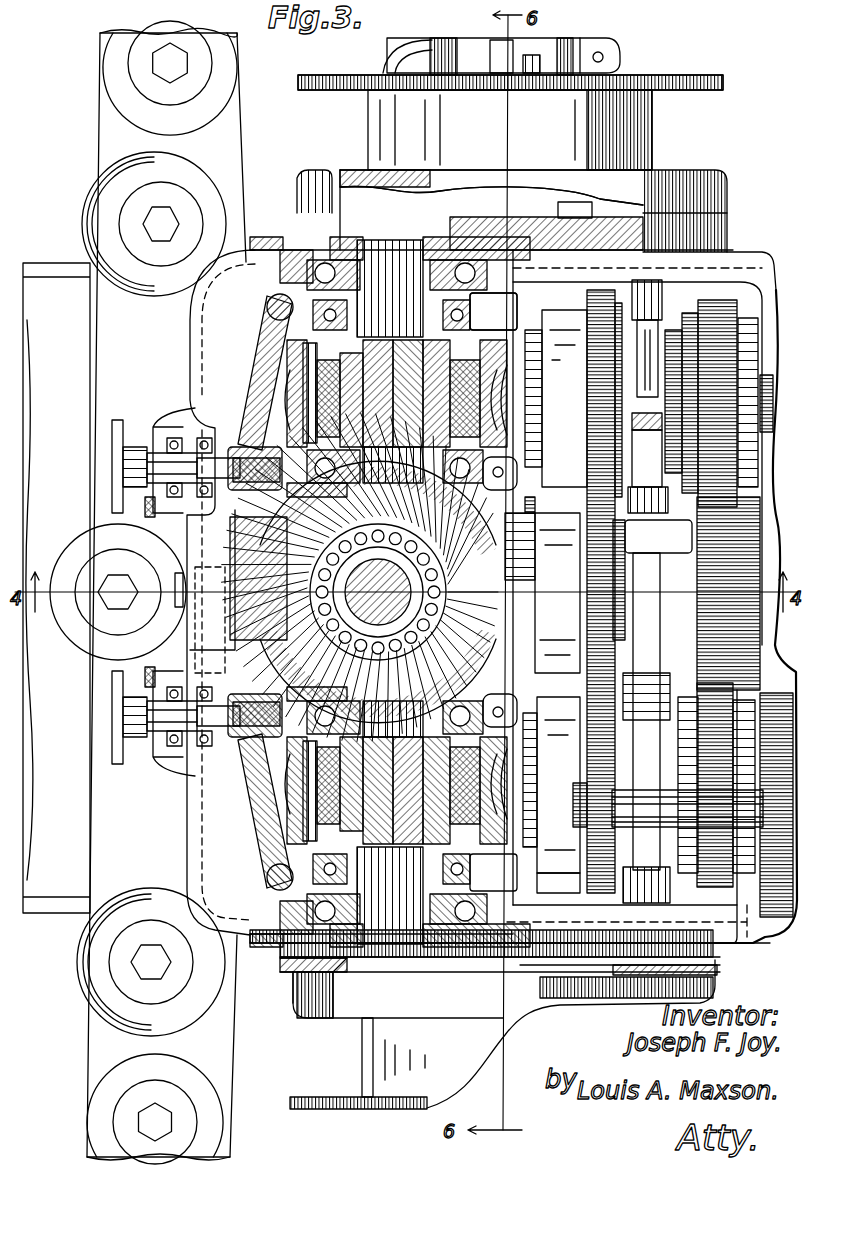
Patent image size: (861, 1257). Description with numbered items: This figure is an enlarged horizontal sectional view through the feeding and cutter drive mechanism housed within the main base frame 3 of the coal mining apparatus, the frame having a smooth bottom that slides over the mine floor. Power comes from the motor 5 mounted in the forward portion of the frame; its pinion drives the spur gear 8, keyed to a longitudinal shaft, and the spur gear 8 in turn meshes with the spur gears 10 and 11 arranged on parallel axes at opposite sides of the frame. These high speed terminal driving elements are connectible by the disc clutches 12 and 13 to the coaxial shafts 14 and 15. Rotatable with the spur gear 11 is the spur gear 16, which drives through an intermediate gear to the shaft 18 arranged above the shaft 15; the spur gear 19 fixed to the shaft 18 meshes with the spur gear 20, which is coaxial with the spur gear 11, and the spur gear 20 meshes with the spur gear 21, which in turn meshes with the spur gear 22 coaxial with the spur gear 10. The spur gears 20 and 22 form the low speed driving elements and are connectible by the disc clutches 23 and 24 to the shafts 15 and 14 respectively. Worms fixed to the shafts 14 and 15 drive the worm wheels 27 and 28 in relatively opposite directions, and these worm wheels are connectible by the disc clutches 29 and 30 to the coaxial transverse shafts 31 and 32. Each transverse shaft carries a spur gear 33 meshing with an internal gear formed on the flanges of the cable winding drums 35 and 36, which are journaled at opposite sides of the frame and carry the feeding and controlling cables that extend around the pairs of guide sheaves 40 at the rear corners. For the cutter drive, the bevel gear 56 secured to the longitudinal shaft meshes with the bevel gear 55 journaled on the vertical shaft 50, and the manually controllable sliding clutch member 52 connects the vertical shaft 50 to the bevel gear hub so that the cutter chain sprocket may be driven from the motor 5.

The main base frame 3 is at (57, 263).
The motor 5 is at (598, 588).
The spur gear 8 is at (740, 560).
The spur gear 10 is at (702, 368).
The spur gear 11 is at (700, 830).
The disc clutch 12 is at (692, 366).
The disc clutch 13 is at (758, 692).
The shaft 14 is at (528, 370).
The shaft 15 is at (545, 862).
The spur gear 16 is at (750, 910).
The shaft 18 is at (690, 813).
The spur gear 19 is at (582, 790).
The spur gear 20 is at (608, 870).
The spur gear 21 is at (548, 665).
The spur gear 22 is at (592, 470).
The disc clutch 23 is at (560, 870).
The disc clutch 24 is at (582, 407).
The worm wheel 27 is at (293, 388).
The worm wheel 28 is at (285, 780).
The disc clutch 29 is at (493, 311).
The disc clutch 30 is at (468, 860).
The shaft 31 is at (373, 283).
The shaft 32 is at (300, 950).
The spur gear 33 is at (352, 198).
The cable winding drum 35 is at (688, 80).
The cable winding drum 36 is at (333, 1112).
The guide sheaves 40 is at (100, 183).
The vertical shaft 50 is at (492, 668).
The sliding clutch member 52 is at (496, 504).
The bevel gear 55 is at (215, 650).
The bevel gear 56 is at (630, 445).